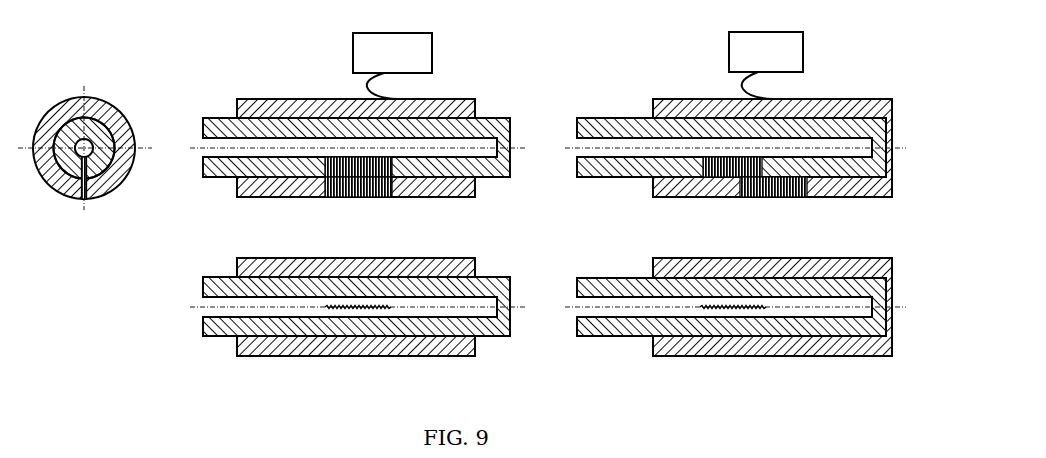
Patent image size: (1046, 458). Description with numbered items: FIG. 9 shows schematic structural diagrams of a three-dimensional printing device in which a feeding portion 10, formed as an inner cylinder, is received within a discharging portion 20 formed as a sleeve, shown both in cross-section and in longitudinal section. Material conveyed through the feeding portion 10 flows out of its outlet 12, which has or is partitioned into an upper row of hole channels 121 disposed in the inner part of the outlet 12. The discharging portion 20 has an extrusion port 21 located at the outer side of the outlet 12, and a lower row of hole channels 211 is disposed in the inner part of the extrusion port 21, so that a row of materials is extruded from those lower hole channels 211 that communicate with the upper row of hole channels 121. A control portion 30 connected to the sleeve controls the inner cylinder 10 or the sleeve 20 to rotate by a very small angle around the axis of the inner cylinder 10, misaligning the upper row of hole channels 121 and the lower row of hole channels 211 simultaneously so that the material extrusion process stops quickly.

The feeding portion 10 is at (112, 165).
The discharging portion 20 is at (112, 192).
The control portion 30 is at (352, 55).
The outlet 12 is at (333, 157).
The upper row of hole channels 121 is at (392, 196).
The lower row of hole channels 211 is at (392, 197).
The extrusion port 21 is at (392, 200).